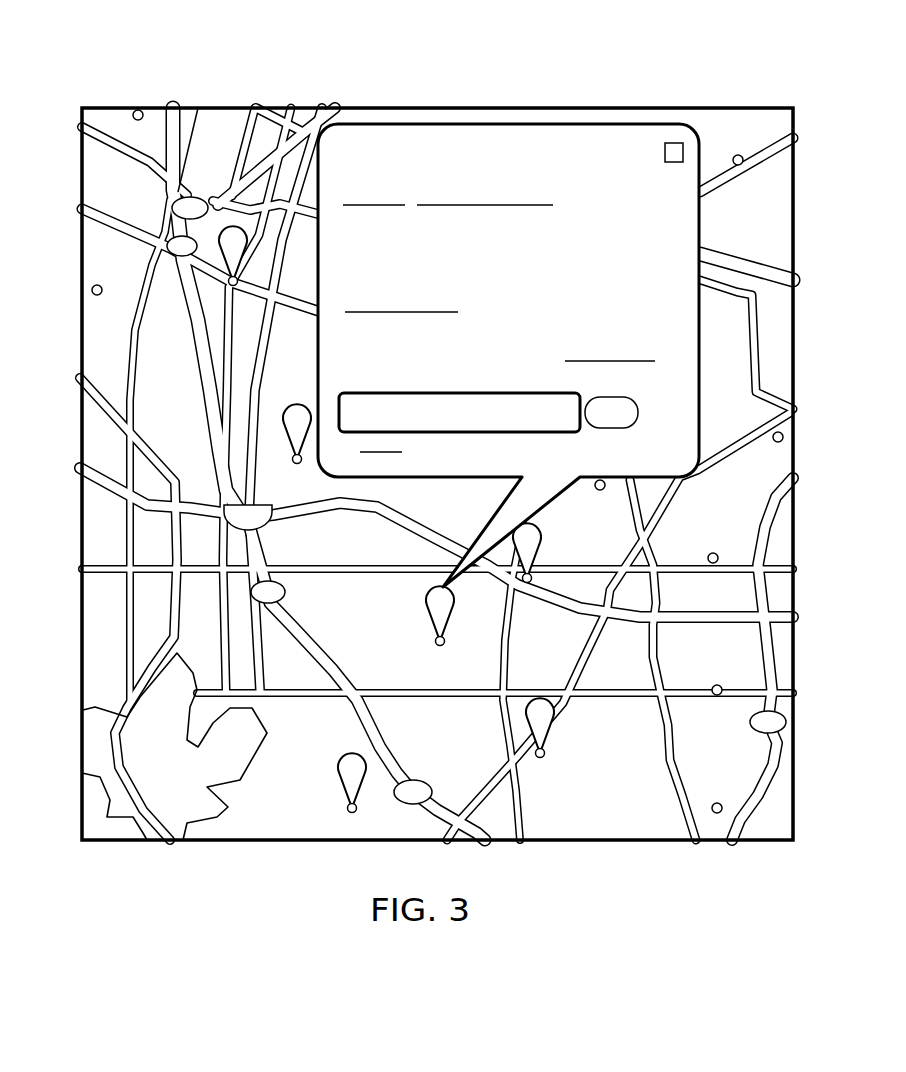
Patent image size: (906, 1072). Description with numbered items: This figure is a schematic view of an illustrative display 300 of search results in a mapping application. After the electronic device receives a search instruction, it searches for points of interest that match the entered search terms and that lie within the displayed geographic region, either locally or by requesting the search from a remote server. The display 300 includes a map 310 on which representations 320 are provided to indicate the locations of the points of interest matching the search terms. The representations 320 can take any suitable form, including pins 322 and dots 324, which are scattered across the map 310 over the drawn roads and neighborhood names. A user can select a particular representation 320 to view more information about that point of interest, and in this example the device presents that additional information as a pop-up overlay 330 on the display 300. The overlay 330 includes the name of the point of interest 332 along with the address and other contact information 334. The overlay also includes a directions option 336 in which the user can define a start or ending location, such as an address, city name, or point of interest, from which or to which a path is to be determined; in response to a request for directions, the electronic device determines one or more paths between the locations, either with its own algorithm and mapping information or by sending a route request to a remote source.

The display 300 is at (411, 435).
The map 310 is at (100, 543).
The representations 320 is at (335, 762).
The pins 322 is at (230, 283).
The dots 324 is at (97, 294).
The overlay 330 is at (687, 317).
The name of the point of interest 332 is at (444, 150).
The address and other contact information 334 is at (524, 228).
The directions option 336 is at (552, 403).